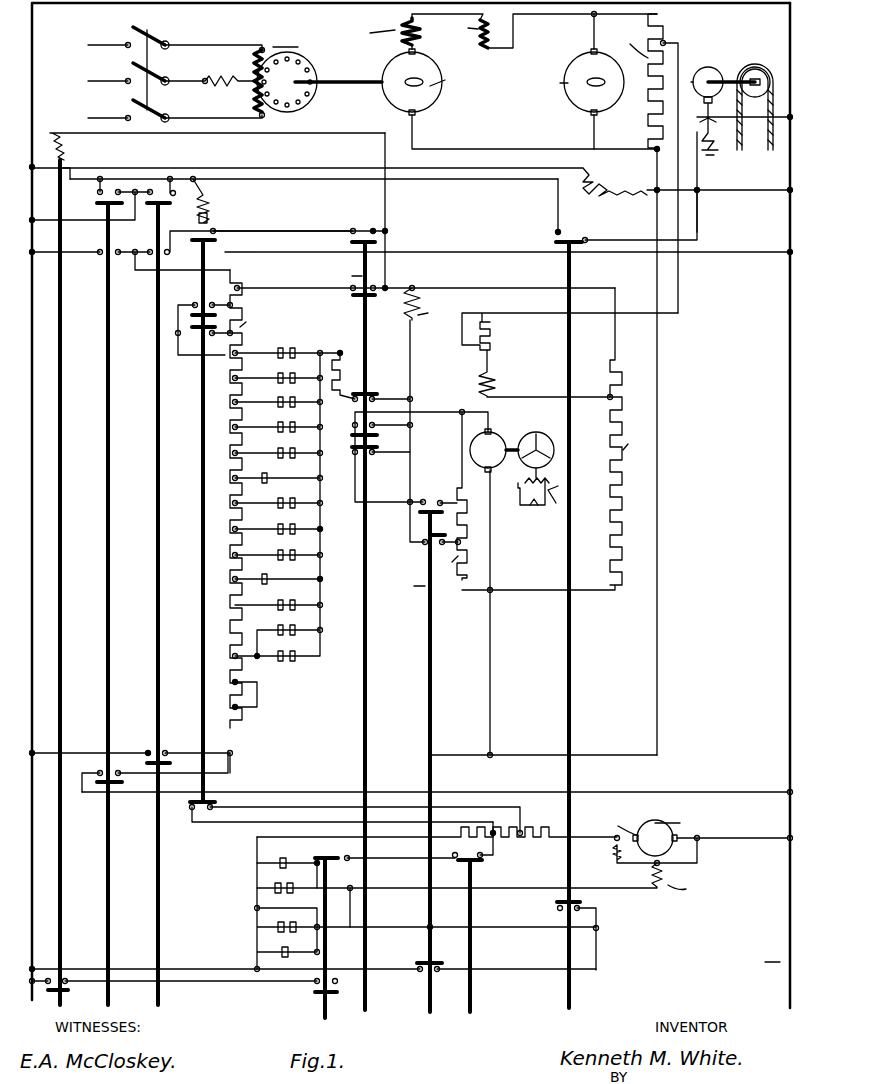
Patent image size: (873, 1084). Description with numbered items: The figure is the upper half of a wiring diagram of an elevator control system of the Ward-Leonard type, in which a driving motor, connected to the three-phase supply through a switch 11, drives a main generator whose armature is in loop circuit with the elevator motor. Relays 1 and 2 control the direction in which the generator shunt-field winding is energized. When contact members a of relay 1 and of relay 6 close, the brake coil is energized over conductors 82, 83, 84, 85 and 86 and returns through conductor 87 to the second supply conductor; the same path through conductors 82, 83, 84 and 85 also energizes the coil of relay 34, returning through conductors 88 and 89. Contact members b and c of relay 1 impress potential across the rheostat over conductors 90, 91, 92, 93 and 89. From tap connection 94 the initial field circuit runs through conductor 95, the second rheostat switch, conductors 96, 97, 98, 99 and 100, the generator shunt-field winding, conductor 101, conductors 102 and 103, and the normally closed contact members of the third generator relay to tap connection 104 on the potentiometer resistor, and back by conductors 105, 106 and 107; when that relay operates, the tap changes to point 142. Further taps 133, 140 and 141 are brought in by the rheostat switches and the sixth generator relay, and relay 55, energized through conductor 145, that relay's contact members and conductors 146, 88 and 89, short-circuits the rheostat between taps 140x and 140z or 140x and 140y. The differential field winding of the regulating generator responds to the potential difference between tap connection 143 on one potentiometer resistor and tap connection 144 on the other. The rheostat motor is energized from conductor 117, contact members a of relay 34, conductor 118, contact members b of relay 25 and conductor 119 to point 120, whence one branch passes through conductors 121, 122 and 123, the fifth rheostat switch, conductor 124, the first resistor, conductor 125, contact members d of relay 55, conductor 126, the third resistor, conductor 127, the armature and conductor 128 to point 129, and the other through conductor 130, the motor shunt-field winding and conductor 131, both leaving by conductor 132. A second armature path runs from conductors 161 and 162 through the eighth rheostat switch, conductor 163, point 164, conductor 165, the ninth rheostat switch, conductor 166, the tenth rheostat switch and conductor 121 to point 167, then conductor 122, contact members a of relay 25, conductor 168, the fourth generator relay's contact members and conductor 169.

The relay 1 is at (156, 427).
The relay 2 is at (104, 427).
The relay 34 is at (60, 308).
The relay 6 is at (562, 271).
The switch 11 is at (165, 26).
The relay 25 is at (337, 1014).
The relay 55 is at (200, 424).
The conductor 82 is at (94, 210).
The conductor 83 is at (92, 198).
The conductor 84 is at (131, 475).
The conductor 85 is at (310, 179).
The conductor 86 is at (632, 230).
The conductor 87 is at (757, 118).
The conductor 88 is at (388, 208).
The conductor 89 is at (292, 247).
The conductor 90 is at (78, 758).
The conductor 91 is at (178, 756).
The conductor 92 is at (190, 270).
The conductor 93 is at (126, 250).
The tap connection 94 is at (232, 579).
The conductor 95 is at (240, 578).
The conductor 96 is at (312, 574).
The conductor 97 is at (321, 547).
The conductor 98 is at (328, 350).
The conductor 99 is at (390, 288).
The conductor 100 is at (408, 298).
The conductor 101 is at (411, 382).
The conductor 102 is at (354, 484).
The conductor 103 is at (410, 527).
The tap connection 104 is at (460, 541).
The conductor 105 is at (462, 593).
The conductor 106 is at (491, 645).
The conductor 107 is at (468, 750).
The conductor 117 is at (38, 992).
The conductor 118 is at (168, 985).
The conductor 119 is at (342, 948).
The point 120 is at (352, 885).
The conductor 121 is at (342, 907).
The conductor 122 is at (310, 880).
The conductor 123 is at (310, 856).
The conductor 124 is at (296, 838).
The conductor 125 is at (402, 821).
The conductor 126 is at (460, 812).
The conductor 127 is at (583, 838).
The conductor 128 is at (688, 837).
The point 129 is at (705, 837).
The conductor 130 is at (490, 891).
The conductor 131 is at (698, 863).
The conductor 132 is at (752, 841).
The tap connection 133 is at (232, 478).
The tap connection 140 is at (228, 372).
The tap connection 140x is at (248, 352).
The tap connection 140y is at (234, 334).
The tap connection 140z is at (234, 307).
The tap connection 141 is at (238, 282).
The point 142 is at (444, 498).
The tap connection 143 is at (608, 396).
The tap connection 144 is at (668, 44).
The conductor 145 is at (296, 226).
The conductor 146 is at (378, 220).
The conductor 161 is at (172, 955).
The conductor 162 is at (254, 958).
The conductor 163 is at (296, 957).
The point 164 is at (310, 914).
The conductor 165 is at (310, 935).
The conductor 166 is at (254, 905).
The point 167 is at (297, 902).
The conductor 168 is at (412, 857).
The conductor 169 is at (494, 866).